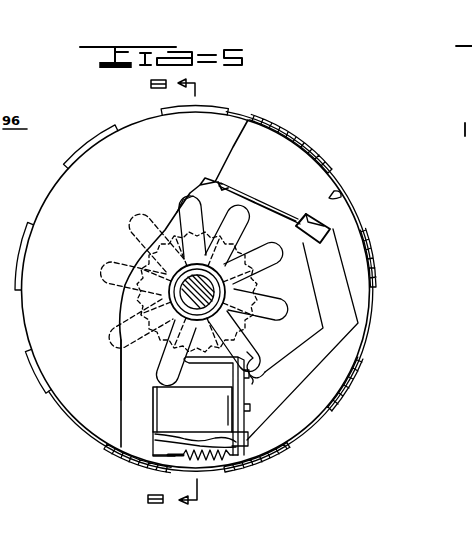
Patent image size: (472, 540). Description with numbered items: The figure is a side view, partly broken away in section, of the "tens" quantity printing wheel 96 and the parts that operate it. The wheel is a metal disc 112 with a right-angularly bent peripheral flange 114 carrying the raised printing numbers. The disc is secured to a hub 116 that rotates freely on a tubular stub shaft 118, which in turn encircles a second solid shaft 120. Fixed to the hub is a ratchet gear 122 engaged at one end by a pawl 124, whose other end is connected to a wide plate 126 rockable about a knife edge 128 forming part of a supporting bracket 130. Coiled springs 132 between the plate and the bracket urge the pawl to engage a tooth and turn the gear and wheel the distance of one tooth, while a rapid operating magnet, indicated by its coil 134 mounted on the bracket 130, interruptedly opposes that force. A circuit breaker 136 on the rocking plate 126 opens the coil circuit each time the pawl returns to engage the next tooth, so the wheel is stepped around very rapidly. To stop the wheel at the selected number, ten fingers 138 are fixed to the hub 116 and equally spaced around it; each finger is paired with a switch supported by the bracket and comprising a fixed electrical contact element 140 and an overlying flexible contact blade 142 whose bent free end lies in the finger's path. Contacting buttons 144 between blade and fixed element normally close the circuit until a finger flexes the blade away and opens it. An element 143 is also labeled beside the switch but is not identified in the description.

The quantity printing wheel 96 is at (240, 294).
The metal disc 112 is at (135, 126).
The peripheral flange 114 is at (343, 197).
The hub 116 is at (166, 262).
The tubular stub shaft 118 is at (178, 303).
The solid shaft 120 is at (232, 246).
The ratchet gear 122 is at (121, 360).
The pawl 124 is at (198, 366).
The plate 126 is at (252, 381).
The knife edge 128 is at (232, 428).
The supporting bracket 130 is at (315, 364).
The coiled spring 132 is at (226, 460).
The coil 134 is at (170, 399).
The circuit breaker 136 is at (282, 438).
The fingers 138 is at (272, 294).
The fixed electrical contact element 140 is at (255, 216).
The flexible contact blade 142 is at (250, 197).
The block 143 is at (320, 224).
The contacting buttons 144 is at (222, 182).